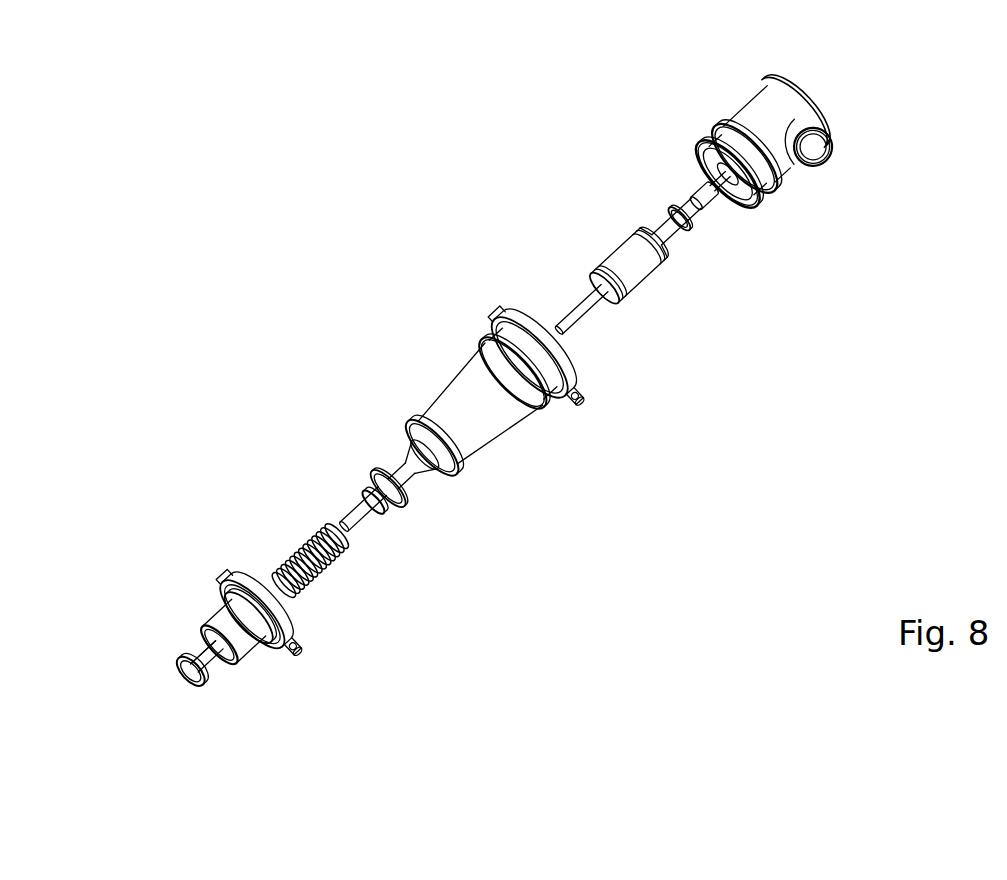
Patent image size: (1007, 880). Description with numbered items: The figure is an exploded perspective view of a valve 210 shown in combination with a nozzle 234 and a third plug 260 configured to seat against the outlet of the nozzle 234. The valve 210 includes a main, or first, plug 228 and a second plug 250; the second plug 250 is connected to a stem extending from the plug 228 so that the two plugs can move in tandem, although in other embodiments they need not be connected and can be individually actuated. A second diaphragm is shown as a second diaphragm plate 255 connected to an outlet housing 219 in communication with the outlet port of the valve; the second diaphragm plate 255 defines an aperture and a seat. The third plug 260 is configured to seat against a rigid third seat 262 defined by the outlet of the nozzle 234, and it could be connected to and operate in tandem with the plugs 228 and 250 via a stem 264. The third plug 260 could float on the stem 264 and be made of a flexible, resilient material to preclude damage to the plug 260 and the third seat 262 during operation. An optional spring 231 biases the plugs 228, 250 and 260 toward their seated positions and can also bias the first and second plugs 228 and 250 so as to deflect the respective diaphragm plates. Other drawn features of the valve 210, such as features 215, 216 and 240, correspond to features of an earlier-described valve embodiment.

The valve 210 is at (424, 117).
The housing 215 is at (764, 108).
The side port 216 is at (820, 170).
The plug 228 is at (647, 273).
The clamp 240 is at (573, 371).
The outlet housing 219 is at (500, 417).
The second diaphragm plate 255 is at (393, 506).
The second plug 250 is at (384, 508).
The spring 231 is at (333, 573).
The nozzle 234 is at (248, 652).
The stem 264 is at (215, 665).
The third plug 260 is at (202, 684).
The third seat 262 is at (198, 633).